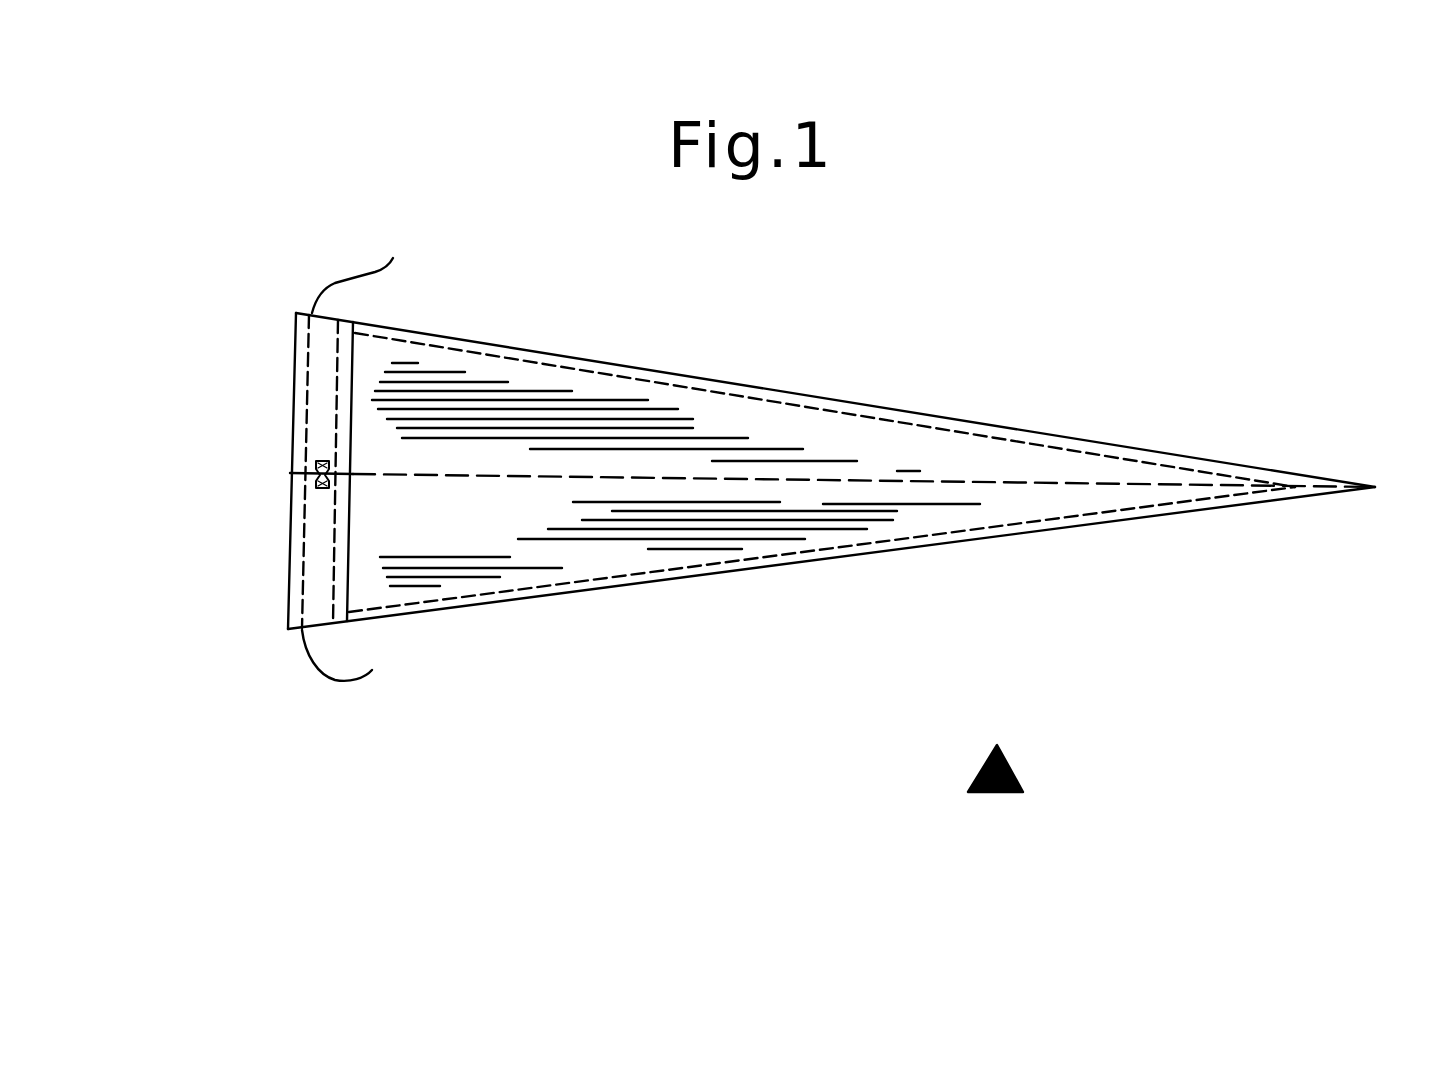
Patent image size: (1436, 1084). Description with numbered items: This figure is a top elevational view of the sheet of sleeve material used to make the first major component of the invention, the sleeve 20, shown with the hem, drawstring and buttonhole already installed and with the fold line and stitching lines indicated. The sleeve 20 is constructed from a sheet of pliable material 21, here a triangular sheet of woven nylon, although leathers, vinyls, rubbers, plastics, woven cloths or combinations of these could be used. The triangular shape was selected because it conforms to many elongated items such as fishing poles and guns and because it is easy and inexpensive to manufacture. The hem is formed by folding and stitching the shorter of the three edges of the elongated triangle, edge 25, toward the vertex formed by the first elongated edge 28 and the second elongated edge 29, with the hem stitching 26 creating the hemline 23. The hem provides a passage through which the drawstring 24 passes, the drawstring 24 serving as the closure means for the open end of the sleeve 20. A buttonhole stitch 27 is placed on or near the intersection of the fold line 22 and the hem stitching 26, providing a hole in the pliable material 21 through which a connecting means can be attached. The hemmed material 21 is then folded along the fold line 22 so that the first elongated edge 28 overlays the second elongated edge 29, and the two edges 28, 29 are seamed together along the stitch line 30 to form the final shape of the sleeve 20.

The sleeve 20 is at (995, 793).
The pliable material 21 is at (1055, 470).
The fold line 22 is at (1053, 482).
The hemline 23 is at (290, 428).
The drawstring 24 is at (307, 372).
The edge 25 is at (350, 553).
The hem stitching 26 is at (338, 397).
The buttonhole stitch 27 is at (322, 488).
The first elongated edge 28 is at (940, 413).
The second elongated edge 29 is at (930, 548).
The stitch line 30 is at (680, 385).